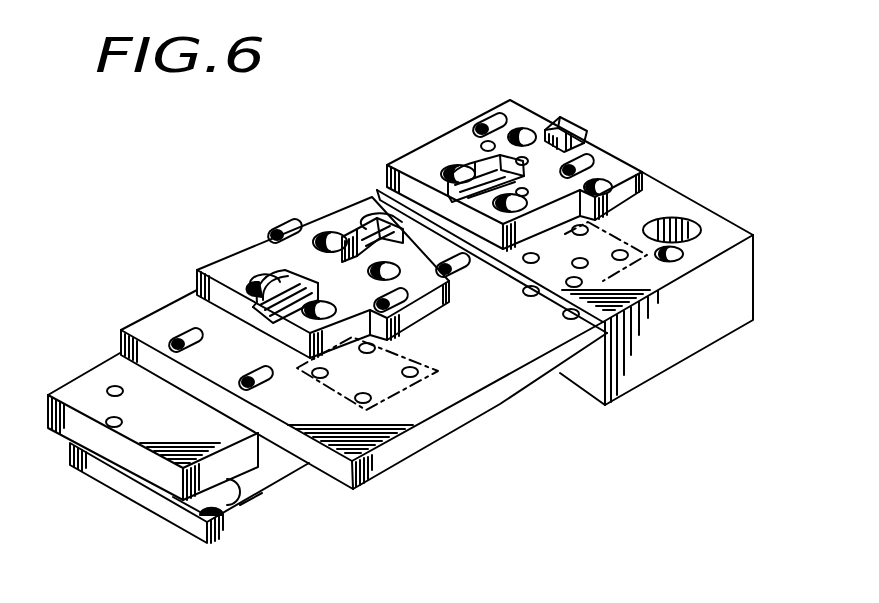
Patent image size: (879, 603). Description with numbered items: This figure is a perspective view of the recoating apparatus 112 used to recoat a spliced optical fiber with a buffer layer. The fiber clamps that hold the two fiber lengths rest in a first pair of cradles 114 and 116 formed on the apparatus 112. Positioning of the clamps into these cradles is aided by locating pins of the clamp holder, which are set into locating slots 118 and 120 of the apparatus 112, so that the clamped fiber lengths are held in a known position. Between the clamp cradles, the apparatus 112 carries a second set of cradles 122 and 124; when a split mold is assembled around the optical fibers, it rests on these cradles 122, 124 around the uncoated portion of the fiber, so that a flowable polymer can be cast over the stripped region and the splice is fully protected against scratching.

The recoating apparatus 112 is at (168, 182).
The cradle 114 is at (253, 302).
The cradle 116 is at (567, 126).
The locating slot 118 is at (333, 320).
The locating slot 120 is at (258, 284).
The cradle 122 is at (338, 247).
The cradle 124 is at (490, 168).